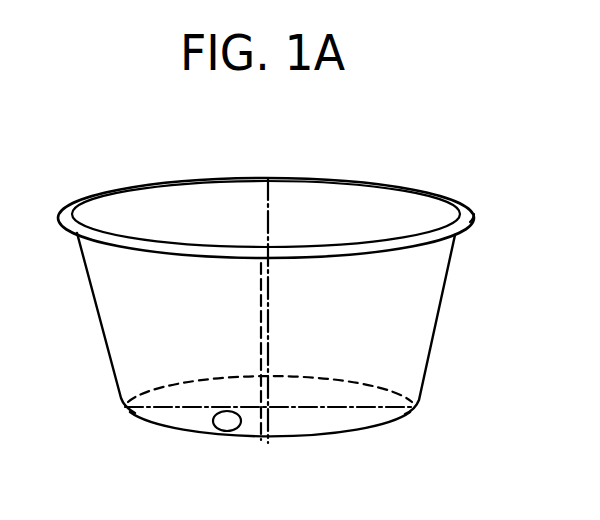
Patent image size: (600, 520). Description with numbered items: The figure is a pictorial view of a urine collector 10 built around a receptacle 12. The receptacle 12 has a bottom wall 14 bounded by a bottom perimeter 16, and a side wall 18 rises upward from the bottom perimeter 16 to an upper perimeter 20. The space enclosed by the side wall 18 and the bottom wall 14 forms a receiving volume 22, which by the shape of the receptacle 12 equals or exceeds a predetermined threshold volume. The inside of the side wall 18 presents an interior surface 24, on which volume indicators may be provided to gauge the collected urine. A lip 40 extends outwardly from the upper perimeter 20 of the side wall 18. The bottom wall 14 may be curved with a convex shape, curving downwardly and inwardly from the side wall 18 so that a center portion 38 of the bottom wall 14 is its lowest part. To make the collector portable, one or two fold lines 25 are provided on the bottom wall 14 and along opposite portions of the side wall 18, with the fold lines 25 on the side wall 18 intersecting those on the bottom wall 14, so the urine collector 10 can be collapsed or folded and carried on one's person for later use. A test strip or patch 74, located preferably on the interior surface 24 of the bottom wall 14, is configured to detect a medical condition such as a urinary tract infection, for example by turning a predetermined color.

The urine collector 10 is at (515, 157).
The receptacle 12 is at (455, 313).
The bottom wall 14 is at (177, 422).
The bottom perimeter 16 is at (402, 389).
The side wall 18 is at (100, 328).
The upper perimeter 20 is at (340, 178).
The receiving volume 22 is at (172, 208).
The interior surface 24 is at (392, 202).
The fold lines 25 is at (255, 273).
The center portion 38 is at (272, 410).
The lip 40 is at (470, 217).
The test strip or patch 74 is at (225, 431).